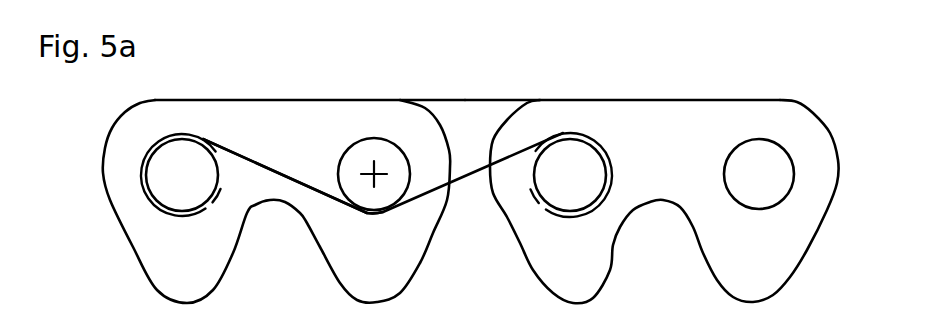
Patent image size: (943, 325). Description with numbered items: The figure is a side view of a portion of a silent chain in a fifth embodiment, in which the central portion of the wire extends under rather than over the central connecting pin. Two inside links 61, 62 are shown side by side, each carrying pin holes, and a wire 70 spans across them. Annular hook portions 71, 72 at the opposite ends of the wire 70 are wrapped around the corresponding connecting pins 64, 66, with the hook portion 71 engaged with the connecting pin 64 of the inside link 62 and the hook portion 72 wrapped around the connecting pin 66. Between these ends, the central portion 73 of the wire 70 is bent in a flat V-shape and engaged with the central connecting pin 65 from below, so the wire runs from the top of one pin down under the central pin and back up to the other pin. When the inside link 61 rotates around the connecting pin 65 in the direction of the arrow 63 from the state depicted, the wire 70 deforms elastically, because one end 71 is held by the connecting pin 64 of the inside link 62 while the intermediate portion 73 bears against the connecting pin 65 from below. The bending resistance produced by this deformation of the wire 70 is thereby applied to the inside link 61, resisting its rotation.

The inside link 61 is at (303, 98).
The inside link 62 is at (668, 95).
The arrow 63 is at (178, 118).
The connecting pin 64 is at (570, 152).
The central connecting pin 65 is at (388, 157).
The connecting pin 66 is at (163, 177).
The wire 70 is at (320, 197).
The annular hook portion 71 is at (593, 213).
The annular hook portion 72 is at (163, 213).
The central portion 73 is at (372, 213).